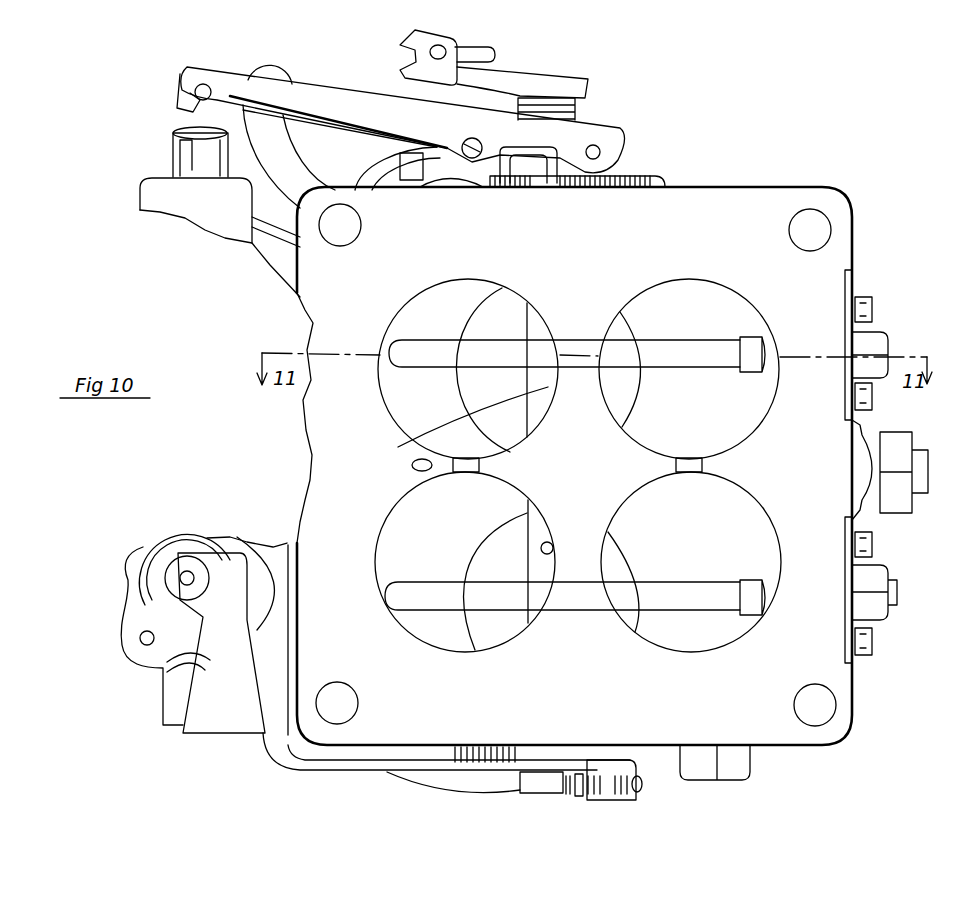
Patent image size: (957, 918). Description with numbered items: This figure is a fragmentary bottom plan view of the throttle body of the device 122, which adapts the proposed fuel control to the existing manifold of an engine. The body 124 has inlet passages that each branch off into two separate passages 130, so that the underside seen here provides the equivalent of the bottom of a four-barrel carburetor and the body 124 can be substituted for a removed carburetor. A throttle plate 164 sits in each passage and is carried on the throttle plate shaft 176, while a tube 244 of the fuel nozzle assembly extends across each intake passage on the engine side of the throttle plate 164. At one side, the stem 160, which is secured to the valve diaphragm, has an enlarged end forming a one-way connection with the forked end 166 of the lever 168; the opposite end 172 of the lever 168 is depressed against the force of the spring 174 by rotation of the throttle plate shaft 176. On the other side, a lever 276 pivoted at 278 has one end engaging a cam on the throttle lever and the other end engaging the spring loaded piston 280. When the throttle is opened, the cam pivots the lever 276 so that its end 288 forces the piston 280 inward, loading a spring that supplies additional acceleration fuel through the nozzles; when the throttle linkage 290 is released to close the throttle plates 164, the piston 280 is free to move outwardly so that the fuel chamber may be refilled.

The device 122 is at (802, 185).
The body 124 is at (556, 153).
The separate passages 130 is at (422, 310).
The stem 160 is at (183, 575).
The throttle plate 164 is at (510, 330).
The forked end 166 is at (187, 570).
The lever 168 is at (320, 768).
The opposite end 172 is at (640, 785).
The spring 174 is at (460, 756).
The throttle plate shaft 176 is at (520, 802).
The tube 244 is at (690, 348).
The lever 276 is at (362, 87).
The pivot 278 is at (465, 144).
The spring loaded piston 280 is at (178, 157).
The end of the lever 288 is at (180, 103).
The throttle linkage 290 is at (538, 72).